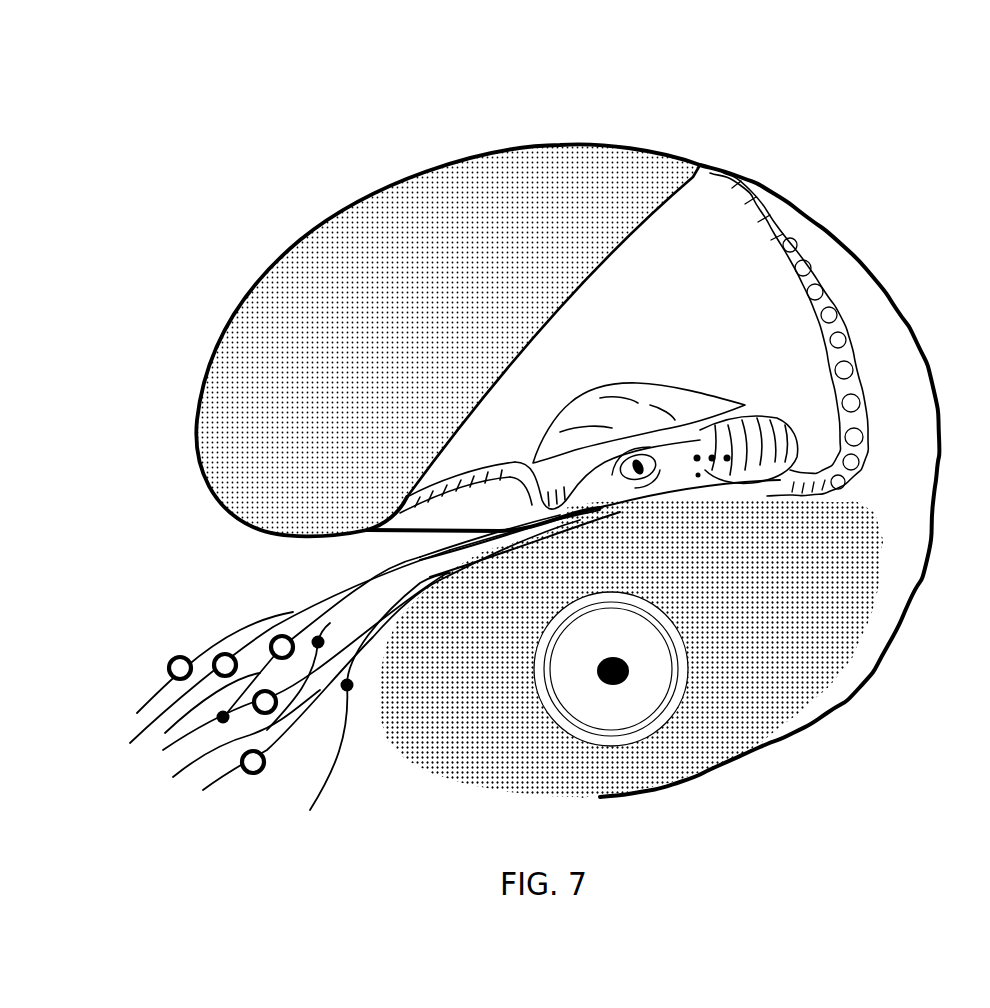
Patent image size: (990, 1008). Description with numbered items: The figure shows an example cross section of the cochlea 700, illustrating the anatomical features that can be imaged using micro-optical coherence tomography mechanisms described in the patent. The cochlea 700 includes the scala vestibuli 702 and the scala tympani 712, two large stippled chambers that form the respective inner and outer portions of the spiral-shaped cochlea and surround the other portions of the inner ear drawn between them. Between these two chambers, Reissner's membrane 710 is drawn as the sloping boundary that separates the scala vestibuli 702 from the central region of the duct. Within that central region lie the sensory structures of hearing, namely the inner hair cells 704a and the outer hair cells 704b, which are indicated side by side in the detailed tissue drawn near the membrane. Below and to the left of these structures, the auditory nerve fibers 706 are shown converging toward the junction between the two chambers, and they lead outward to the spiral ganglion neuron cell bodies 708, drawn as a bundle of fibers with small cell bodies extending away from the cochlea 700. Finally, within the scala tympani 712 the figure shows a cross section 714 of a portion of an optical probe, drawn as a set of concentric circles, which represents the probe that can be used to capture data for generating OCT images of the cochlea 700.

The cochlea 700 is at (560, 49).
The scala vestibuli 702 is at (340, 361).
The inner hair cells 704a is at (637, 443).
The outer hair cells 704b is at (697, 440).
The auditory nerve fibers 706 is at (607, 522).
The spiral ganglion neuron cell bodies 708 is at (230, 620).
The Reissner's membrane 710 is at (505, 340).
The scala tympani 712 is at (792, 686).
The cross section of a portion of an optical probe 714 is at (692, 645).